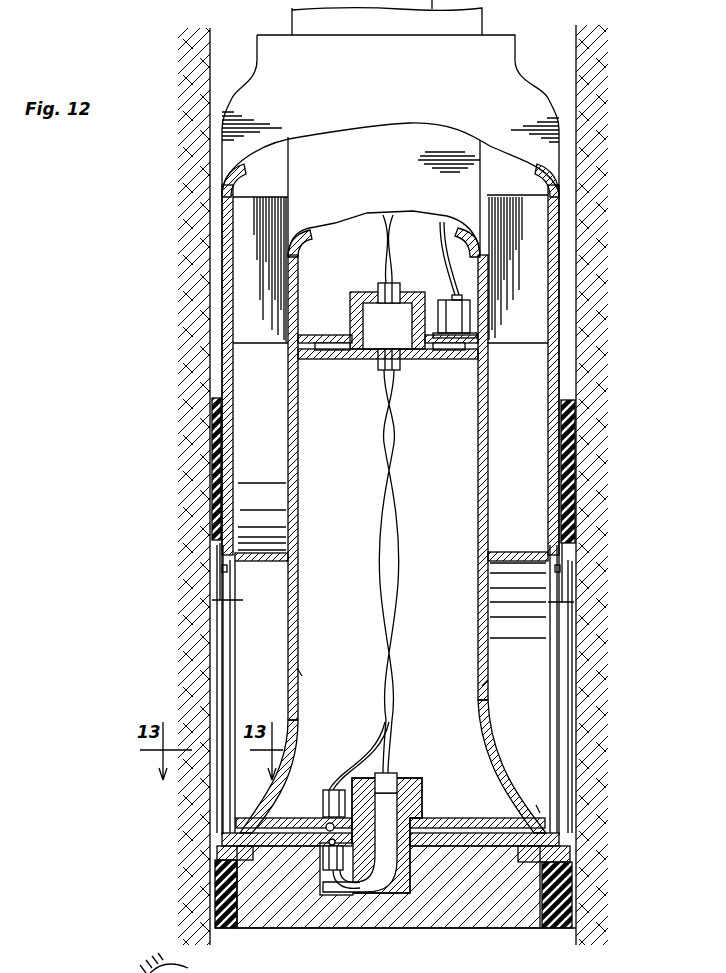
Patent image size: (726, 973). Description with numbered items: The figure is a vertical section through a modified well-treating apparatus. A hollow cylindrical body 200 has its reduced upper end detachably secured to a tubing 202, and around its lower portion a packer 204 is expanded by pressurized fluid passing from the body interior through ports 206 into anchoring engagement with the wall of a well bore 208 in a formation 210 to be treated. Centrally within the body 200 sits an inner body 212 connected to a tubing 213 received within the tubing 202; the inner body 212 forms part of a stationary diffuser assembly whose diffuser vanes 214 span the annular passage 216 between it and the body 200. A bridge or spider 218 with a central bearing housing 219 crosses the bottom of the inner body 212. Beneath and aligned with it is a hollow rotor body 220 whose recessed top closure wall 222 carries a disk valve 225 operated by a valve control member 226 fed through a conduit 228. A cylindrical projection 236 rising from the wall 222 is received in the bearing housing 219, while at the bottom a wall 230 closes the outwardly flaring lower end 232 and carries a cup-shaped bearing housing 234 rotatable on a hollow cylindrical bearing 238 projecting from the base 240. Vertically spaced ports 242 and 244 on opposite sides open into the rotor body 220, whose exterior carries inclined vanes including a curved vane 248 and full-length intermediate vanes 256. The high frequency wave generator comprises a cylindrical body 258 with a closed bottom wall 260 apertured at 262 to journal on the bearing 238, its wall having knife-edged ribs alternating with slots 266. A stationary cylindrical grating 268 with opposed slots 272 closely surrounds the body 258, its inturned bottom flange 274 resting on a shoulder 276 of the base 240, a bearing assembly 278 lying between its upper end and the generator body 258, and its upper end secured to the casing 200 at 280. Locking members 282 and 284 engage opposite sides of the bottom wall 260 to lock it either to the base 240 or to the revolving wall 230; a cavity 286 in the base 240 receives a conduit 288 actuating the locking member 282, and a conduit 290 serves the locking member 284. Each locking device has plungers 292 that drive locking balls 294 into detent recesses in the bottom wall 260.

The hollow cylindrical body 200 is at (560, 289).
The tubing 202 is at (292, 19).
The packer 204 is at (213, 463).
The ports 206 is at (231, 444).
The well bore 208 is at (581, 236).
The formation 210 is at (586, 124).
The inner casing or body 212 is at (298, 262).
The tubing 213 is at (421, 0).
The diffuser vanes 214 is at (518, 269).
The annular passage 216 is at (272, 171).
The bridge or spider 218 is at (325, 333).
The bearing housing 219 is at (417, 293).
The rotor body 220 is at (486, 483).
The top closure wall 222 is at (437, 357).
The disk valve 225 is at (308, 349).
The valve control member 226 is at (466, 307).
The conduit 228 is at (452, 243).
The wall 230 is at (492, 821).
The outwardly flaring lower end 232 is at (536, 805).
The bearing housing 234 is at (401, 783).
The cylindrical projection 236 is at (373, 313).
The hollow cylindrical bearing 238 is at (408, 800).
The base 240 is at (478, 912).
The ports 242 is at (293, 708).
The ports 244 is at (482, 707).
The curved vane 248 is at (247, 683).
The intermediate vanes 256 is at (272, 528).
The cylindrical body 258 is at (224, 604).
The bottom wall 260 is at (250, 834).
The aperture 262 is at (443, 830).
The slots 266 is at (229, 652).
The cylindrical grating 268 is at (208, 598).
The slots 272 is at (218, 641).
The inturned bottom flange 274 is at (235, 848).
The shoulder 276 is at (544, 871).
The bearing assembly 278 is at (210, 573).
The securing point 280 is at (210, 544).
The locking member 282 is at (303, 898).
The locking member 284 is at (321, 789).
The cavity 286 is at (375, 895).
The fluid conducting conduit 288 is at (394, 740).
The conduit 290 is at (393, 663).
The plungers 292 is at (383, 775).
The locking balls 294 is at (326, 823).